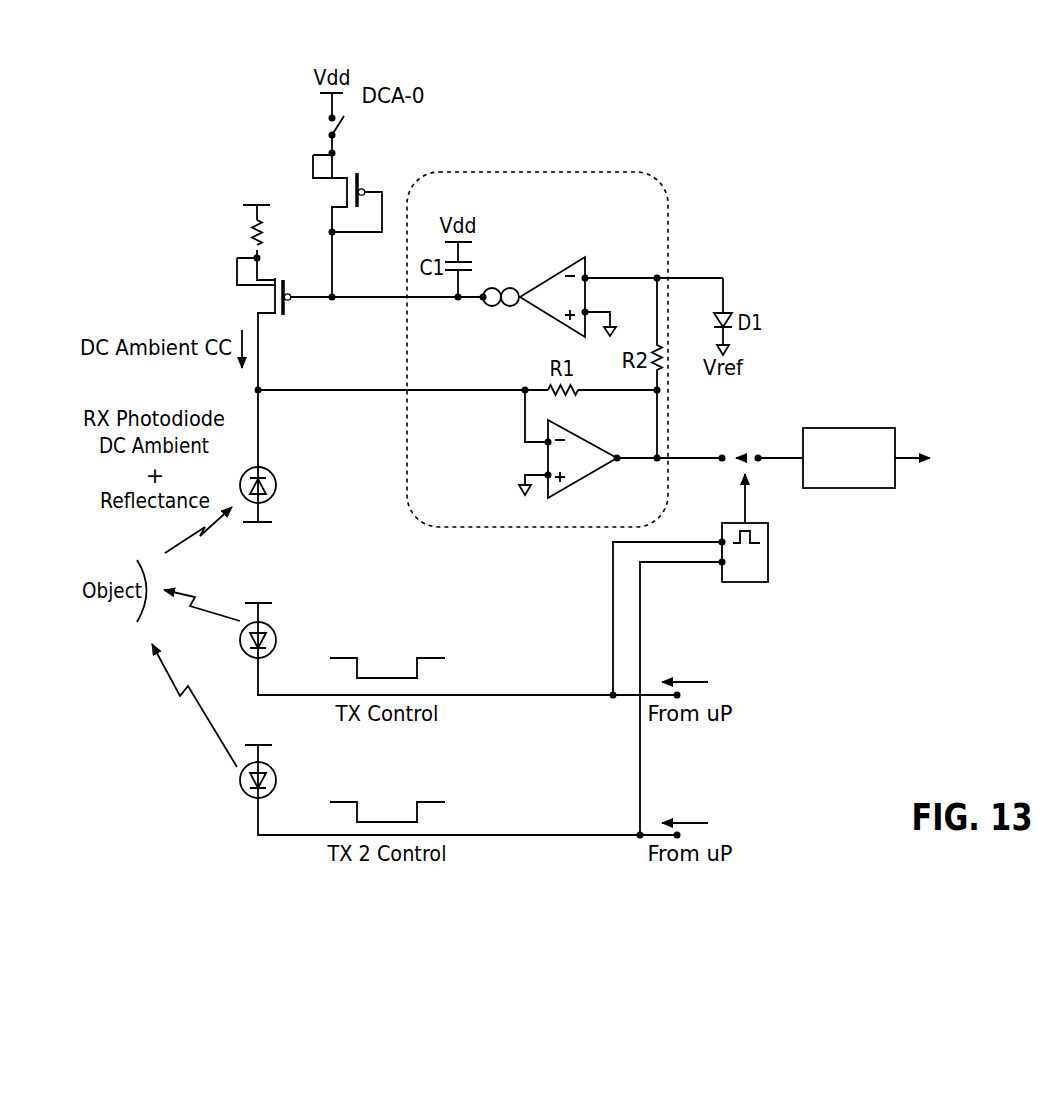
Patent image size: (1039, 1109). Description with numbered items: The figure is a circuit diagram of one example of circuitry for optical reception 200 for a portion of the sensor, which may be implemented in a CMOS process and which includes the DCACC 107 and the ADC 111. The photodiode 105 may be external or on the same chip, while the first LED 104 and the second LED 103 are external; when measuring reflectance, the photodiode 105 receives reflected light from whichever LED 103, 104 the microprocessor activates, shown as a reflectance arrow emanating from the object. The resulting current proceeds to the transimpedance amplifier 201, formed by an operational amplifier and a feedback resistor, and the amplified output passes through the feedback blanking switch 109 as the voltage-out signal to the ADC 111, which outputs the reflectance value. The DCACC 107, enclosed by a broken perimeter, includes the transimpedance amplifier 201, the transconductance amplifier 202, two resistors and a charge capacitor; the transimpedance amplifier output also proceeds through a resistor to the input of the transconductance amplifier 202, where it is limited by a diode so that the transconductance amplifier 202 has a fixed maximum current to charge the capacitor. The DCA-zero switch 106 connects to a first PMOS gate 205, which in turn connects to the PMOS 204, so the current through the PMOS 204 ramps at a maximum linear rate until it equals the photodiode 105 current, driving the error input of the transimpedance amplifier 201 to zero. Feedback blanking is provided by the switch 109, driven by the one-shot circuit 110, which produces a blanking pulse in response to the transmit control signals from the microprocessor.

The LED2 103 is at (276, 780).
The LED1 104 is at (276, 640).
The photodiode 105 is at (276, 485).
The DCA-0 switch 106 is at (283, 122).
The DCACC 107 is at (678, 198).
The FBS 109 is at (765, 438).
The one-shot circuit 110 is at (720, 576).
The ADC 111 is at (852, 500).
The circuitry for optical reception 200 is at (852, 277).
The transimpedance amplifier 201 is at (547, 457).
The transconductance amplifier 202 is at (546, 316).
The PMOS 204 is at (237, 267).
The PMOS gate P2 205 is at (313, 163).